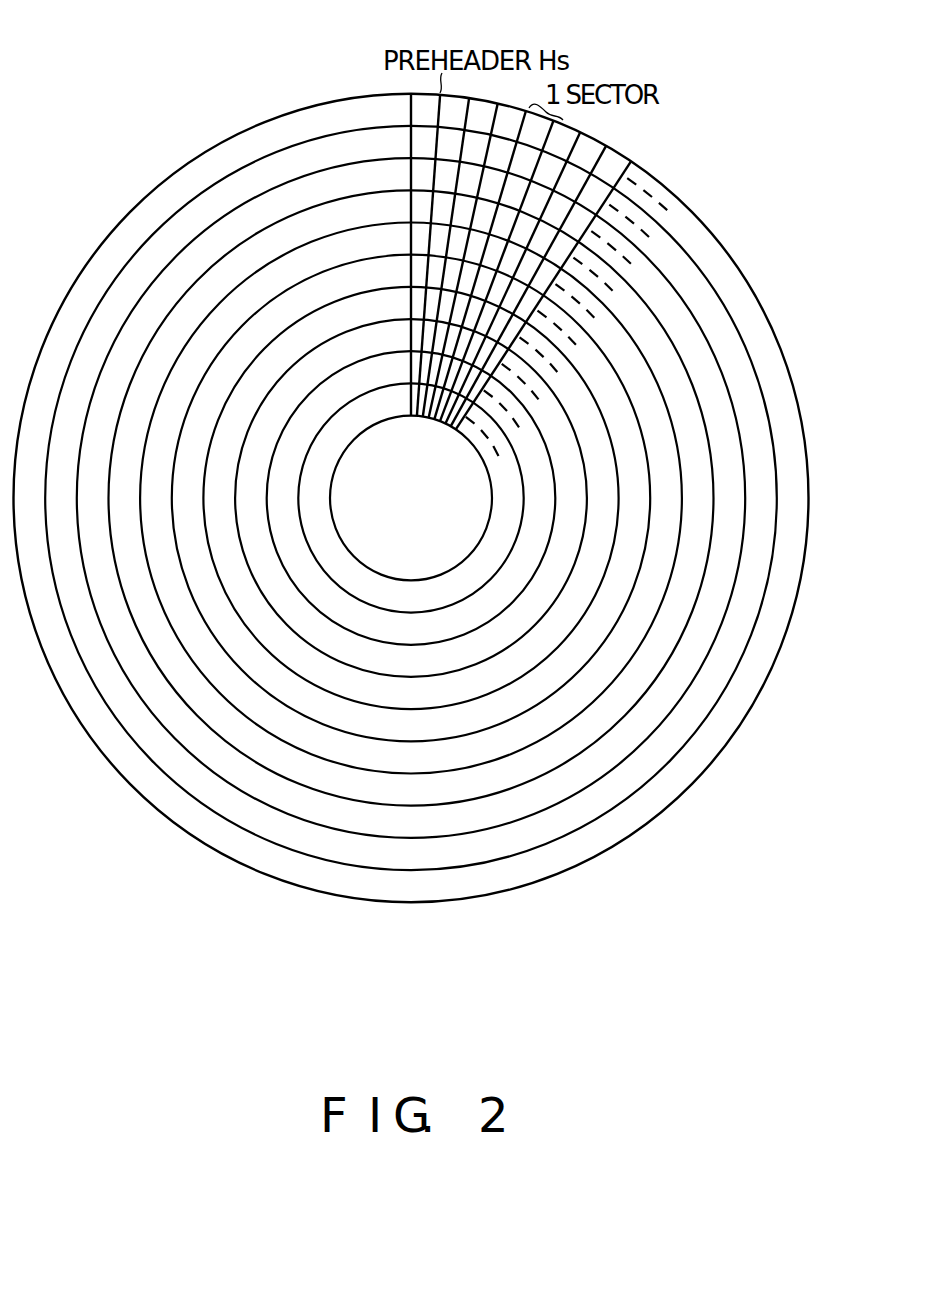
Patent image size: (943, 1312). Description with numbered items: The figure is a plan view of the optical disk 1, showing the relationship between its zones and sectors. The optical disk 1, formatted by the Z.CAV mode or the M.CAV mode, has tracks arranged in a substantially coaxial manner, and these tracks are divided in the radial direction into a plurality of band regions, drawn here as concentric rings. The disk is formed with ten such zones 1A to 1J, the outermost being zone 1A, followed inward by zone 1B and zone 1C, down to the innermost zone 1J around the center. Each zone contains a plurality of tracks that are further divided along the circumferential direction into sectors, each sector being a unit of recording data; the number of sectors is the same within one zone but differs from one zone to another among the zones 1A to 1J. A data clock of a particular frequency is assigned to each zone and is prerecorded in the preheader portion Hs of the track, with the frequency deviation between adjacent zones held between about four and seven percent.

The optical disk 1 is at (660, 205).
The zone 1A is at (705, 255).
The zone 1B is at (712, 325).
The zone 1C is at (705, 397).
The zone 1J is at (490, 540).